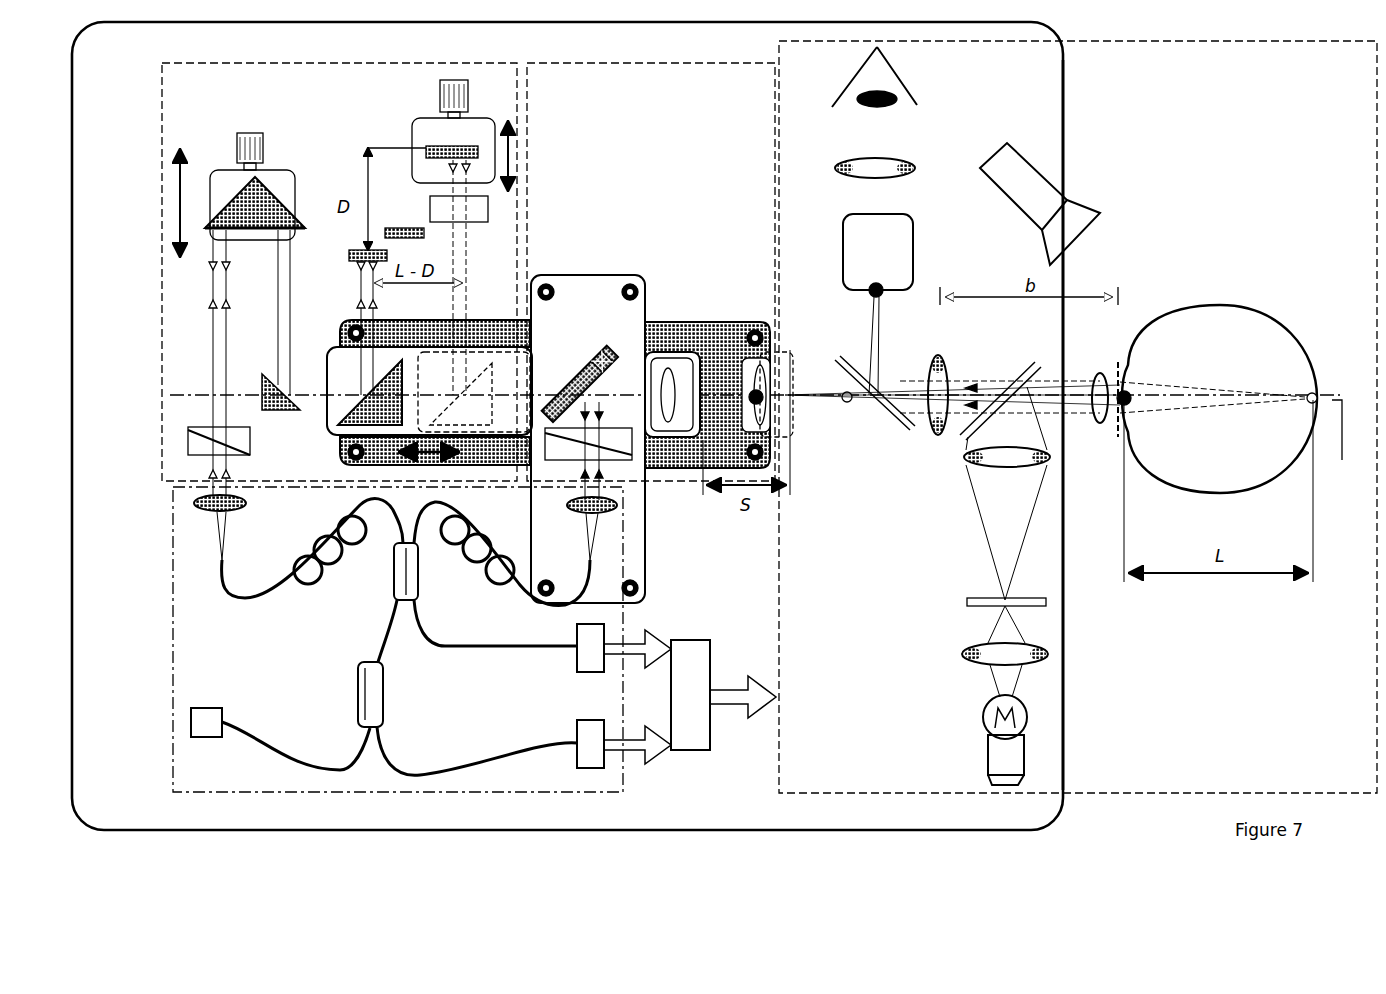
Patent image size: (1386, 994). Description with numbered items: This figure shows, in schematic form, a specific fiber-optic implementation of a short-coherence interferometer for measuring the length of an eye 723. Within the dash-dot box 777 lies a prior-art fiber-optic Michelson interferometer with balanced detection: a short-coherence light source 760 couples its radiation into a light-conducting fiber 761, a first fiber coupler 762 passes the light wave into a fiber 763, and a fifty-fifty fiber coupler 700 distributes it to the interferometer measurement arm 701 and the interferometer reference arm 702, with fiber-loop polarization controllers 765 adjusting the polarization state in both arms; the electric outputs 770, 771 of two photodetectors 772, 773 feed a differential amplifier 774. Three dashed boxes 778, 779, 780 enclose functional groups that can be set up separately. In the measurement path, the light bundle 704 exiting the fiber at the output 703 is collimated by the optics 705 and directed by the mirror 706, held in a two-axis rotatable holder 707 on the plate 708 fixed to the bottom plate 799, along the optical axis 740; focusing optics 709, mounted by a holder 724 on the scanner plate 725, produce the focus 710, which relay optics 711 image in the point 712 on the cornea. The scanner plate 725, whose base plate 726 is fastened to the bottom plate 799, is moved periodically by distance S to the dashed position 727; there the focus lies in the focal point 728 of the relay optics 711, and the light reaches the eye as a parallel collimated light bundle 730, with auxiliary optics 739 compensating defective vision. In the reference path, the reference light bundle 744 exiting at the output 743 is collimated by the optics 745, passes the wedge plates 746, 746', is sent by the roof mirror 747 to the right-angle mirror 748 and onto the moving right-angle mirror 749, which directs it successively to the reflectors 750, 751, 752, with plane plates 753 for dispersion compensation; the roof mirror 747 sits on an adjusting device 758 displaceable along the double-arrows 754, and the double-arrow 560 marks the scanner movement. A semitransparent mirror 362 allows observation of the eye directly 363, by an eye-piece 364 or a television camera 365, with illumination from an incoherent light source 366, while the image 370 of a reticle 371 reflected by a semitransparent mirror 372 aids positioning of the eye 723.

The box 778 is at (162, 63).
The box 779 is at (528, 63).
The box 780 is at (779, 63).
The bottom plate 799 is at (1030, 90).
The box 777 is at (623, 792).
The adjusting device 758 is at (235, 175).
The roof mirror 747 is at (210, 225).
The double-arrows 754 is at (180, 150).
The reflector 750 is at (352, 250).
The reflector 751 is at (408, 228).
The reflector 752 is at (470, 148).
The plane plates 753 is at (488, 208).
The base plate 726 is at (470, 322).
The displacement arrow 560 is at (435, 458).
The scanner plate 725 is at (500, 345).
The moving right-angle mirror 749 is at (335, 420).
The right-angle mirror 748 is at (262, 385).
The wedge plate 746' is at (173, 414).
The wedge plate 746 is at (173, 431).
The optics of a fiber collimator 745 is at (200, 498).
The reference light bundle 744 is at (220, 548).
The fiber interferometer output 743 is at (220, 572).
The interferometer reference arm 702 is at (318, 555).
The fiber-loop polarization controllers 765 is at (455, 568).
The fiber coupler 700 is at (395, 593).
The interferometer measurement arm 701 is at (495, 545).
The plate 708 is at (585, 275).
The mirror 706 is at (608, 368).
The holder 707 is at (612, 385).
The optics of a fiber collimator 705 is at (617, 507).
The light bundle 704 is at (598, 530).
The fiber interferometer output 703 is at (592, 567).
The holder 724 is at (755, 345).
The focusing optics 709 is at (672, 372).
The direct observation 363 is at (848, 93).
The eye-piece 364 is at (840, 165).
The television camera 365 is at (845, 248).
The incoherent light source 366 is at (1037, 183).
The focus 710 is at (795, 380).
The focal point 728 is at (850, 402).
The position 727 is at (795, 440).
The semitransparent mirror 362 is at (912, 432).
The relay optics 711 is at (940, 358).
The parallel collimated light bundle 730 is at (990, 378).
The semitransparent mirror 372 is at (964, 442).
The reticle 371 is at (968, 598).
The auxiliary optics 739 is at (1102, 425).
The image 370 is at (1117, 360).
The point 712 is at (1128, 372).
The eye 723 is at (1290, 372).
The optical axis 740 is at (1336, 448).
The short-coherence light source 760 is at (191, 725).
The light-conducting fiber 761 is at (255, 738).
The first fiber coupler 762 is at (358, 705).
The fiber 763 is at (380, 650).
The photodetector 772 is at (585, 650).
The photodetector 773 is at (585, 732).
The electric output 770 is at (650, 640).
The electric output 771 is at (650, 760).
The differential amplifier 774 is at (693, 668).